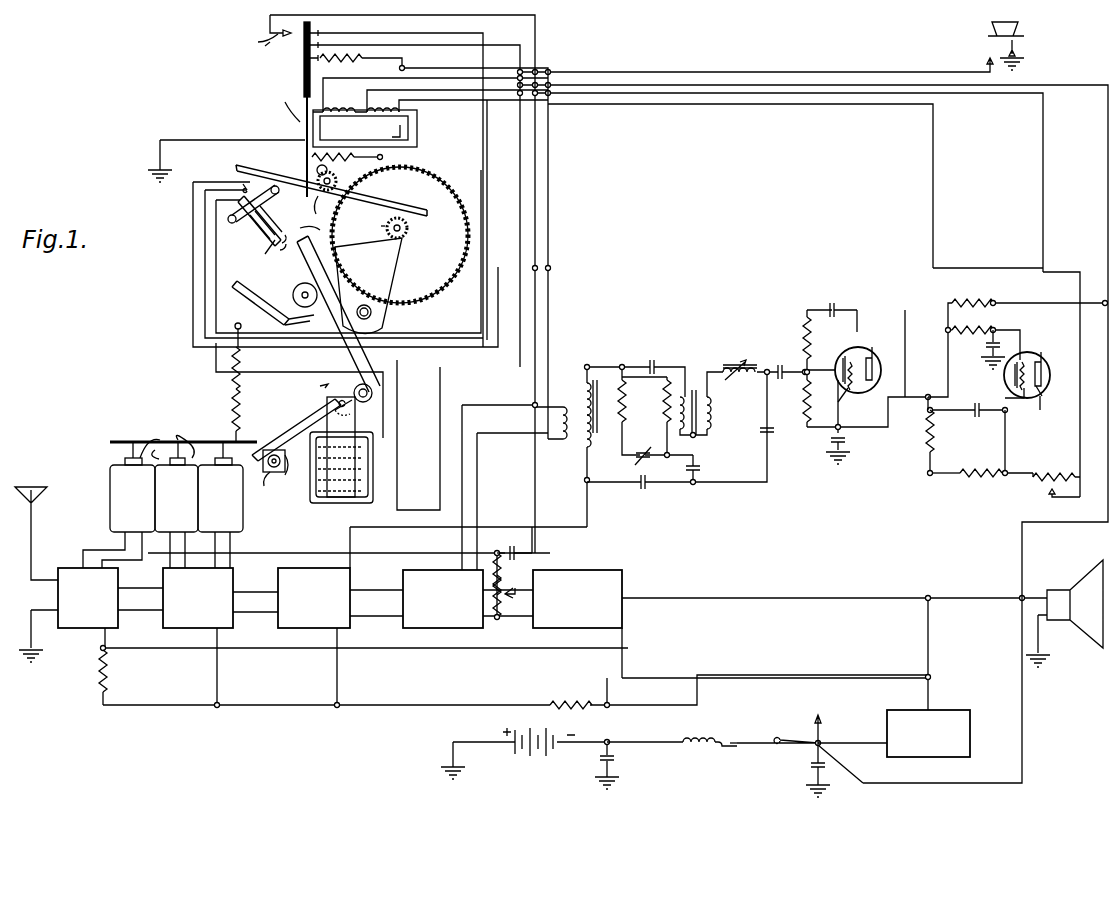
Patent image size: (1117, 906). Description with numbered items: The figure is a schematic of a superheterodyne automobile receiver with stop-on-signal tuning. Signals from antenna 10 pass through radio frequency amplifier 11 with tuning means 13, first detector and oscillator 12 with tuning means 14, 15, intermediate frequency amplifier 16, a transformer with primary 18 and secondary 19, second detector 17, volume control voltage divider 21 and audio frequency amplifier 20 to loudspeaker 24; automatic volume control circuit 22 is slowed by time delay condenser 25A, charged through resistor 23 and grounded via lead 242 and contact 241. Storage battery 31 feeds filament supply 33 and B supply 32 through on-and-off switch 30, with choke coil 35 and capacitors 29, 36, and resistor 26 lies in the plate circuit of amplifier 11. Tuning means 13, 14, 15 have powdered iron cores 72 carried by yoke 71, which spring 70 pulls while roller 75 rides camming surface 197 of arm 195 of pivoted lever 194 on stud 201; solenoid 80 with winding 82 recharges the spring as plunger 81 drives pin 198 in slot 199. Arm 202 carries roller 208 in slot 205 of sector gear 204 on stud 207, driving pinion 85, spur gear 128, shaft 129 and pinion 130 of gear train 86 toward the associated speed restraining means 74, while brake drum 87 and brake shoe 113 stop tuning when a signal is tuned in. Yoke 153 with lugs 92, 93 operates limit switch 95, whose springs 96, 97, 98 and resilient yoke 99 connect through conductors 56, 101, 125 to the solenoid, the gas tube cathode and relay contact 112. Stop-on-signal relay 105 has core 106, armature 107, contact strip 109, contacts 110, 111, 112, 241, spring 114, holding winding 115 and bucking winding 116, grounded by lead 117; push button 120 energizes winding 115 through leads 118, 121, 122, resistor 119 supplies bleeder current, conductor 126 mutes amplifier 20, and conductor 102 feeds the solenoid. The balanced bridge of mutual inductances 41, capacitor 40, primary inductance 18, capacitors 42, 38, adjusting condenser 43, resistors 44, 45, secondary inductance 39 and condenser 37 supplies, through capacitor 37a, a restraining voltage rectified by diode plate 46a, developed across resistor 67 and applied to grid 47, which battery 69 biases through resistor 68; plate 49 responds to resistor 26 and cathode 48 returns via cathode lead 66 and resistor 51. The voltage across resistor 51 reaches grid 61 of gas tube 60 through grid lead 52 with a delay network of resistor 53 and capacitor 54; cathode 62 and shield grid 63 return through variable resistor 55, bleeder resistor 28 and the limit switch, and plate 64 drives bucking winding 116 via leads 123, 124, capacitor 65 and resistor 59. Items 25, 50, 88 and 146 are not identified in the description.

The antenna 10 is at (36, 522).
The tuned radio frequency amplifier 11 is at (82, 630).
The first detector and oscillator 12 is at (176, 631).
The variable tuning means 13 is at (132, 495).
The variable tuning means 14 is at (176, 495).
The variable tuning means 15 is at (220, 495).
The intermediate frequency amplifier 16 is at (291, 631).
The second detector 17 is at (431, 631).
The primary 18 is at (590, 430).
The secondary 19 is at (560, 435).
The audio frequency amplifier 20 is at (551, 631).
The volume control voltage divider 21 is at (500, 590).
The automatic volume control circuit 22 is at (430, 553).
The resistor 23 is at (488, 560).
The loudspeaker 24 is at (1085, 648).
The conductor 25 is at (110, 645).
The time delay condenser 25A is at (516, 546).
The resistor 26 is at (108, 676).
The bleeder resistor 28 is at (968, 482).
The capacitor 29 is at (828, 768).
The on-and-off switch 30 is at (812, 748).
The vehicle storage battery 31 is at (548, 752).
The high voltage B supply 32 is at (935, 757).
The filament supply 33 is at (822, 722).
The choke coil 35 is at (700, 755).
The capacitor 36 is at (615, 758).
The condenser 37 is at (772, 440).
The capacitor 37a is at (782, 362).
The capacitor 38 is at (648, 492).
The adjustable secondary inductance 39 is at (735, 352).
The capacitor 40 is at (702, 468).
The mutual inductances 41 is at (705, 420).
The capacitor 42 is at (656, 355).
The adjusting condenser 43 is at (652, 463).
The resistor 44 is at (642, 416).
The resistor 45 is at (653, 428).
The diode plate 46a is at (840, 352).
The grid 47 is at (862, 350).
The cathode 48 is at (822, 399).
The plate 49 is at (875, 360).
The conductor 50 is at (1062, 300).
The resistor 51 is at (968, 297).
The grid lead 52 is at (1023, 324).
The resistor 53 is at (972, 321).
The capacitor 54 is at (988, 345).
The variable resistor 55 is at (1050, 470).
The conductor 56 is at (188, 272).
The current limiting resistor 59 is at (938, 442).
The electron tube 60 is at (1045, 368).
The grid 61 is at (1010, 372).
The cathode 62 is at (1012, 384).
The shield grid 63 is at (1048, 410).
The plate 64 is at (1048, 362).
The capacitor 65 is at (975, 420).
The cathode lead 66 is at (870, 440).
The resistor 67 is at (804, 405).
The resistor 68 is at (800, 330).
The biasing battery 69 is at (838, 296).
The spring 70 is at (230, 405).
The yoke 71 is at (126, 440).
The movable internal cores 72 is at (178, 437).
The speed restraining means 74 is at (385, 202).
The roller 75 is at (271, 485).
The electromagnetic solenoid 80 is at (373, 452).
The plunger 81 is at (355, 418).
The solenoid winding 82 is at (360, 470).
The first pinion 85 is at (408, 230).
The speed amplifying gear train 86 is at (428, 272).
The brake drum 87 is at (337, 168).
The gear 88 is at (345, 186).
The lug 92 is at (309, 229).
The lug 93 is at (248, 268).
The limit switch 95 is at (230, 203).
The contact carrying spring 96 is at (272, 224).
The contact spring 97 is at (258, 231).
The contact blade 98 is at (260, 248).
The resilient yoke 99 is at (265, 270).
The conductor 101 is at (212, 367).
The conductor 102 is at (397, 490).
The stop-on-signal relay 105 is at (417, 128).
The ferromagnetic core 106 is at (405, 145).
The armature 107 is at (276, 106).
The contact strip 109 is at (300, 68).
The contact 110 is at (262, 58).
The contact 111 is at (330, 45).
The contact 112 is at (318, 28).
The brake shoe 113 is at (304, 155).
The spring 114 is at (342, 138).
The operating and holding winding 115 is at (336, 105).
The bucking winding 116 is at (451, 98).
The ground lead 117 is at (193, 138).
The positive lead 118 is at (692, 73).
The current limiting resistor 119 is at (355, 60).
The push button 120 is at (1018, 30).
The conductor 121 is at (1020, 52).
The negative lead 122 is at (700, 82).
The lead 123 is at (700, 106).
The lead 124 is at (700, 94).
The lead 125 is at (188, 243).
The conductor 126 is at (258, 17).
The spur gear 128 is at (440, 168).
The common shaft 129 is at (365, 217).
The pinion 130 is at (310, 209).
The cathode lead 146 is at (852, 400).
The yoke 153 is at (262, 335).
The pivoted lever 194 is at (305, 385).
The arm 195 is at (290, 430).
The camming surface 197 is at (296, 466).
The pin 198 is at (324, 406).
The slot 199 is at (360, 405).
The stud 201 is at (375, 390).
The arm 202 is at (325, 360).
The sector gear 204 is at (329, 287).
The slot 205 is at (330, 297).
The stud 207 is at (372, 314).
The roller 208 is at (345, 282).
The normally closed contact 241 is at (248, 41).
The lead 242 is at (520, 494).